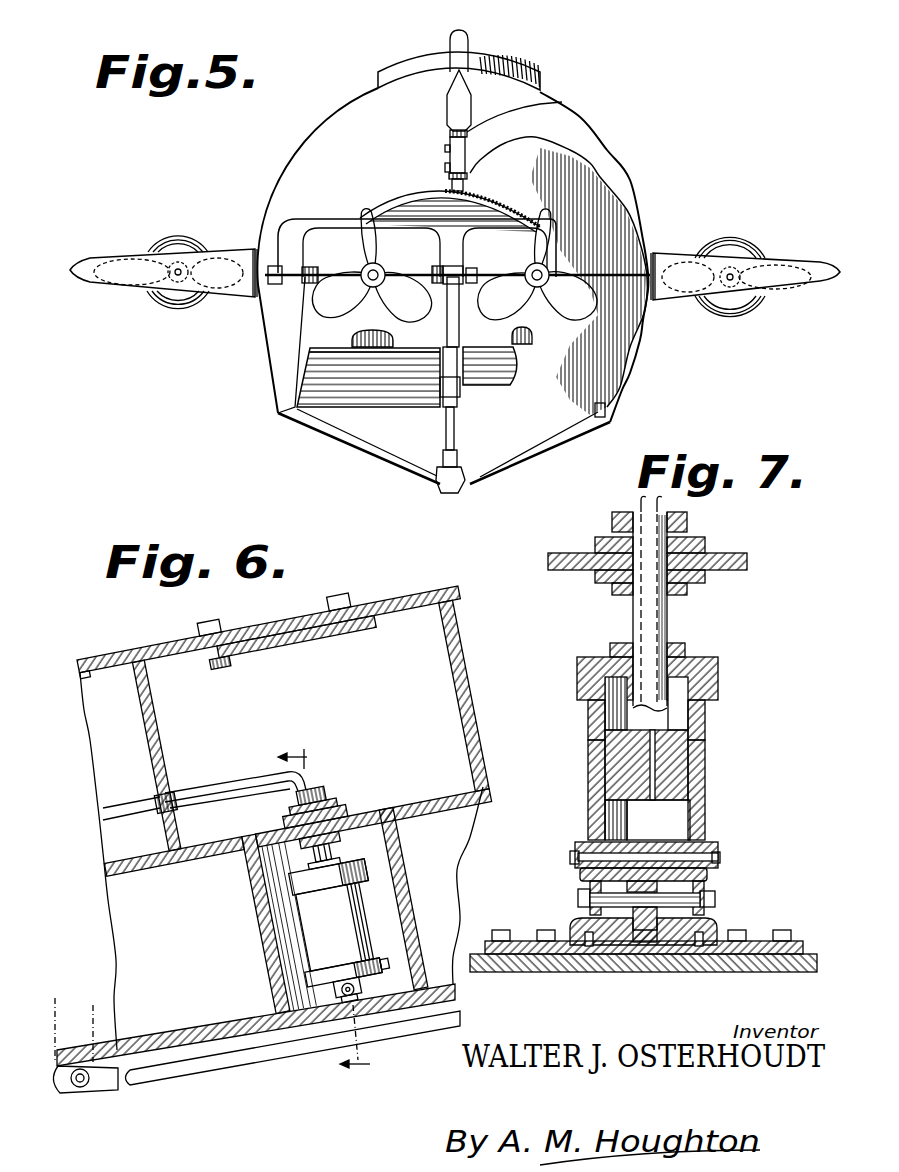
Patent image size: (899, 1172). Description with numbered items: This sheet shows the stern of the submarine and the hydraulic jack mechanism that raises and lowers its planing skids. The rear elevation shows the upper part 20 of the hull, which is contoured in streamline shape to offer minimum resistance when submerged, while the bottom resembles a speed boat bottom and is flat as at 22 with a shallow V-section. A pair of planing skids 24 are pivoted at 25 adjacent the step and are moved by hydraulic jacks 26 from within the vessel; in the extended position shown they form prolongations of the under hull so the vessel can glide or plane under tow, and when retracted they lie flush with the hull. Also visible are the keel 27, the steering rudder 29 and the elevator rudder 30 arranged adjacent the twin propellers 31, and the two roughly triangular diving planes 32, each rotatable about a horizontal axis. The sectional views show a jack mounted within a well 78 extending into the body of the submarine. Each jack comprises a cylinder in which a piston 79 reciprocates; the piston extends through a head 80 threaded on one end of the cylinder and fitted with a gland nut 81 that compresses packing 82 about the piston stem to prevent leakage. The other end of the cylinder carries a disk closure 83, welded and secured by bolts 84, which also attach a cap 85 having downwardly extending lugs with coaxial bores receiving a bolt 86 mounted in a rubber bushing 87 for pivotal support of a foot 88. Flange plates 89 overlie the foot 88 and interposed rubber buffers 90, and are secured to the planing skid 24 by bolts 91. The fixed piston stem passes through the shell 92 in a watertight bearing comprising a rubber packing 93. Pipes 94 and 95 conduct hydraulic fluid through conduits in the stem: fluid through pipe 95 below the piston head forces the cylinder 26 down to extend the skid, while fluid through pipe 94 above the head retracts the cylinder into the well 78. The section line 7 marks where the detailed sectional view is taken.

In FIG. 6, the section line 7— 7 is at (325, 913).
In FIG. 5, the upper part of the hull 20 is at (570, 124).
In FIG. 5, the flat bottom portion 22 is at (353, 449).
In FIG. 5, the planing skids 24 is at (296, 386).
In FIG. 7, the planing skids 24 is at (617, 965).
In FIG. 6, the planing skids 24 is at (236, 1058).
In FIG. 5, the pivot 25 is at (315, 418).
In FIG. 6, the pivot 25 is at (76, 1088).
In FIG. 5, the hydraulic jack 26 is at (375, 330).
In FIG. 7, the hydraulic jack 26 is at (704, 765).
In FIG. 6, the hydraulic jack 26 is at (362, 913).
In FIG. 5, the keel 27 is at (460, 493).
In FIG. 5, the steering rudder 29 is at (623, 236).
In FIG. 5, the elevator rudder 30 is at (414, 212).
In FIG. 5, the twin propellers 31 is at (337, 302).
In FIG. 5, the diving planes 32 is at (118, 258).
In FIG. 6, the well 78 is at (257, 915).
In FIG. 7, the piston 79 is at (707, 739).
In FIG. 7, the head 80 is at (723, 665).
In FIG. 7, the gland nut 81 is at (683, 651).
In FIG. 7, the packing 82 is at (607, 660).
In FIG. 7, the disk closure 83 is at (707, 819).
In FIG. 7, the bolts 84 is at (722, 860).
In FIG. 7, the cap 85 is at (633, 858).
In FIG. 7, the bolt 86 is at (583, 898).
In FIG. 7, the rubber bushing 87 is at (577, 882).
In FIG. 7, the foot 88 is at (650, 950).
In FIG. 7, the flange plates 89 is at (511, 950).
In FIG. 7, the rubber buffers 90 is at (588, 935).
In FIG. 7, the bolts 91 is at (635, 925).
In FIG. 7, the shell 92 is at (570, 564).
In FIG. 6, the shell 92 is at (360, 812).
In FIG. 7, the rubber packing 93 is at (610, 542).
In FIG. 7, the pipe 94 is at (641, 500).
In FIG. 6, the pipe 94 is at (212, 799).
In FIG. 7, the pipe 95 is at (663, 498).
In FIG. 6, the pipe 95 is at (258, 777).